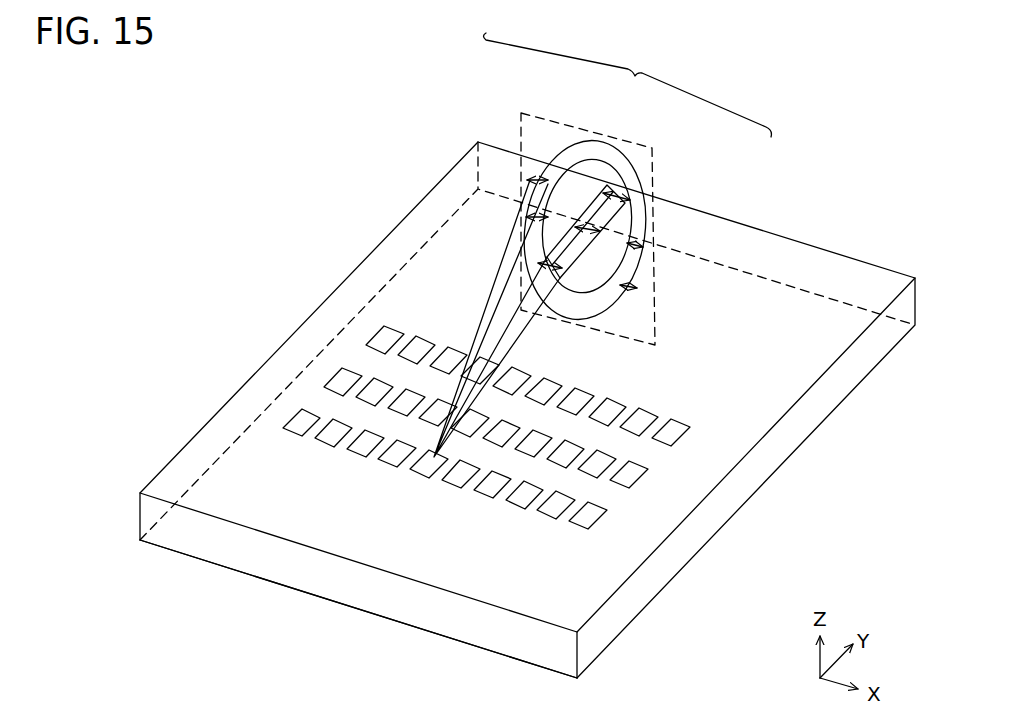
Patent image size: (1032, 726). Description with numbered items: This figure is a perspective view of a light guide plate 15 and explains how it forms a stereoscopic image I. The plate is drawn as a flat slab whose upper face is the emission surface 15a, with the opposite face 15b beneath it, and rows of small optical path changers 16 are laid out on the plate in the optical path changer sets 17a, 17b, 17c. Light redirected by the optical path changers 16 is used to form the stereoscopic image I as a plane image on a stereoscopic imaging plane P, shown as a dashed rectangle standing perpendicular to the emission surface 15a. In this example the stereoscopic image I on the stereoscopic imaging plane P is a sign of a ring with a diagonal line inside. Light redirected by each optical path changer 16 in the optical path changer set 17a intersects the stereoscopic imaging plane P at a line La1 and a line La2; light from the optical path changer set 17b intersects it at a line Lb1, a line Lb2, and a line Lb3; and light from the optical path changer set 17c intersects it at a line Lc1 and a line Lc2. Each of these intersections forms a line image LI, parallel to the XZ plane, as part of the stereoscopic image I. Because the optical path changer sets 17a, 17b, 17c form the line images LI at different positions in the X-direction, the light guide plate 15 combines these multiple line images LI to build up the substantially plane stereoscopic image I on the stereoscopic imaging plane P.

The light guide plate 15 is at (210, 422).
The emission surface 15a is at (233, 480).
The second surface of substrate 15b is at (237, 568).
The optical path changer 16 is at (533, 411).
The optical path changer set 17a is at (606, 526).
The optical path changer set 17b is at (649, 483).
The optical path changer set 17c is at (691, 439).
The stereoscopic image I is at (636, 298).
The stereoscopic imaging plane P is at (657, 339).
The line image LI is at (628, 85).
The line La1 is at (547, 181).
The line Lb1 is at (528, 178).
The line Lc1 is at (577, 226).
The line Lb2 is at (605, 191).
The line La2 is at (631, 199).
The line Lb3 is at (644, 245).
The line Lc2 is at (638, 287).